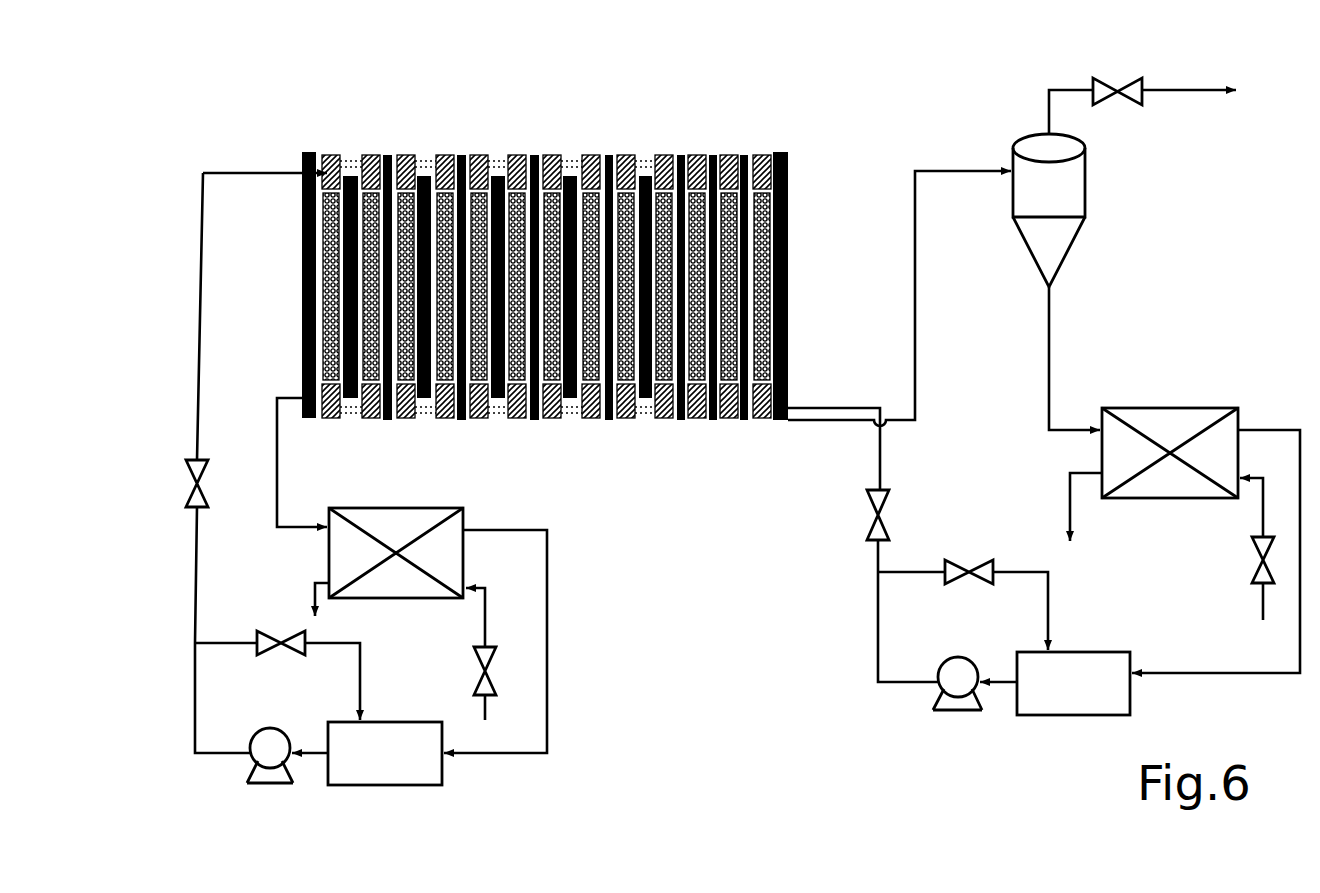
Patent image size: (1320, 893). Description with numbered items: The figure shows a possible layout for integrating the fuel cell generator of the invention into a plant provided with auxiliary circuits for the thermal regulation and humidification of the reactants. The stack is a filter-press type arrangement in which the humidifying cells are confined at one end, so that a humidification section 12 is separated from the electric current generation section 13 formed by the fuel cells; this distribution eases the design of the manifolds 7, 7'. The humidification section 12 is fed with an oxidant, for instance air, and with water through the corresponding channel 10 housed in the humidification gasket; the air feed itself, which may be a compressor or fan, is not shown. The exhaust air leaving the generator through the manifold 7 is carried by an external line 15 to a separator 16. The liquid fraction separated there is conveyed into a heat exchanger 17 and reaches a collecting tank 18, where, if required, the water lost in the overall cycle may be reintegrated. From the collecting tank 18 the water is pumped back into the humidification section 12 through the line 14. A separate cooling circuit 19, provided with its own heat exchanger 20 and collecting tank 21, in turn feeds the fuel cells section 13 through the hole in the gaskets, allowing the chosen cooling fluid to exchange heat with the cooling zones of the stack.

The manifold 7 is at (597, 476).
The manifold 7' is at (683, 126).
The channel 10 is at (756, 396).
The humidification section 12 is at (782, 149).
The electric current generation section 13 is at (660, 135).
The line 14 is at (863, 525).
The external line 15 is at (899, 277).
The separator 16 is at (1124, 182).
The heat exchanger 17 is at (1161, 453).
The collecting tank 18 is at (1089, 572).
The cooling circuit 19 is at (242, 463).
The heat exchanger 20 is at (386, 559).
The collecting tank 21 is at (371, 657).